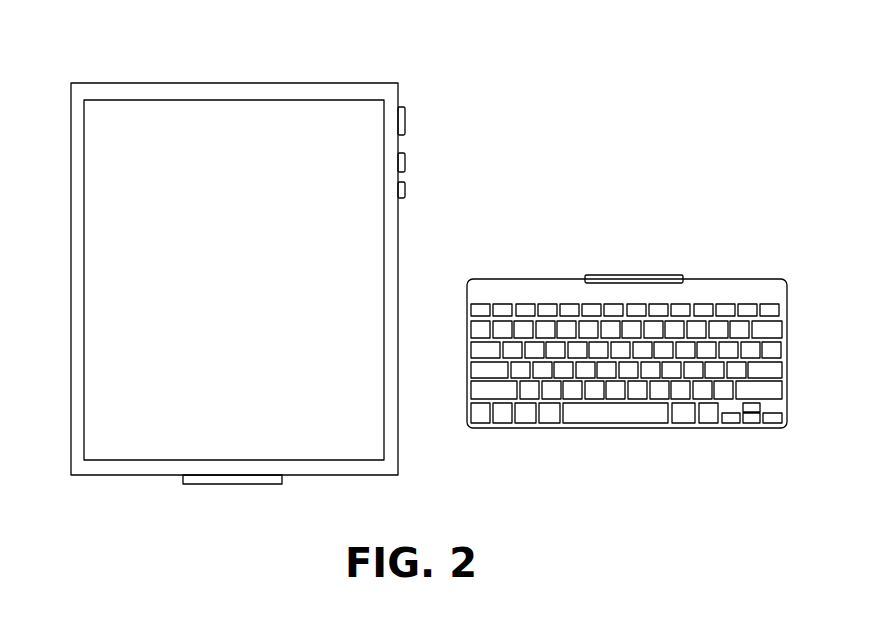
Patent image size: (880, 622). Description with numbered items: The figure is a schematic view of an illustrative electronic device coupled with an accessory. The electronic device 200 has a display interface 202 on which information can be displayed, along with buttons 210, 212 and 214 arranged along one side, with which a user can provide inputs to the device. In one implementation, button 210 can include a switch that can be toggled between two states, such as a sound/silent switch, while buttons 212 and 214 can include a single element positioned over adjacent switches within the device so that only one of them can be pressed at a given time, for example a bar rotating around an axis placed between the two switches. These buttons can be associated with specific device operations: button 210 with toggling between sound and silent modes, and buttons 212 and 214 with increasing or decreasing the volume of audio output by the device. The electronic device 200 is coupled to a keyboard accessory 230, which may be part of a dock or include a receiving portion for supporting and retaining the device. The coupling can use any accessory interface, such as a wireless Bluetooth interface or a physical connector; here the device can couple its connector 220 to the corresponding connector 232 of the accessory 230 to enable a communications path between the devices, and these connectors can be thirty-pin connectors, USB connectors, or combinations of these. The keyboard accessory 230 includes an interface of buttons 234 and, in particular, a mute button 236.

The electronic device 200 is at (136, 52).
The display interface 202 is at (357, 314).
The button 210 is at (405, 121).
The button 212 is at (405, 165).
The button 214 is at (405, 188).
The connector 220 is at (237, 484).
The keyboard accessory 230 is at (532, 300).
The connector 232 is at (627, 274).
The buttons 234 is at (595, 426).
The mute button 236 is at (703, 308).